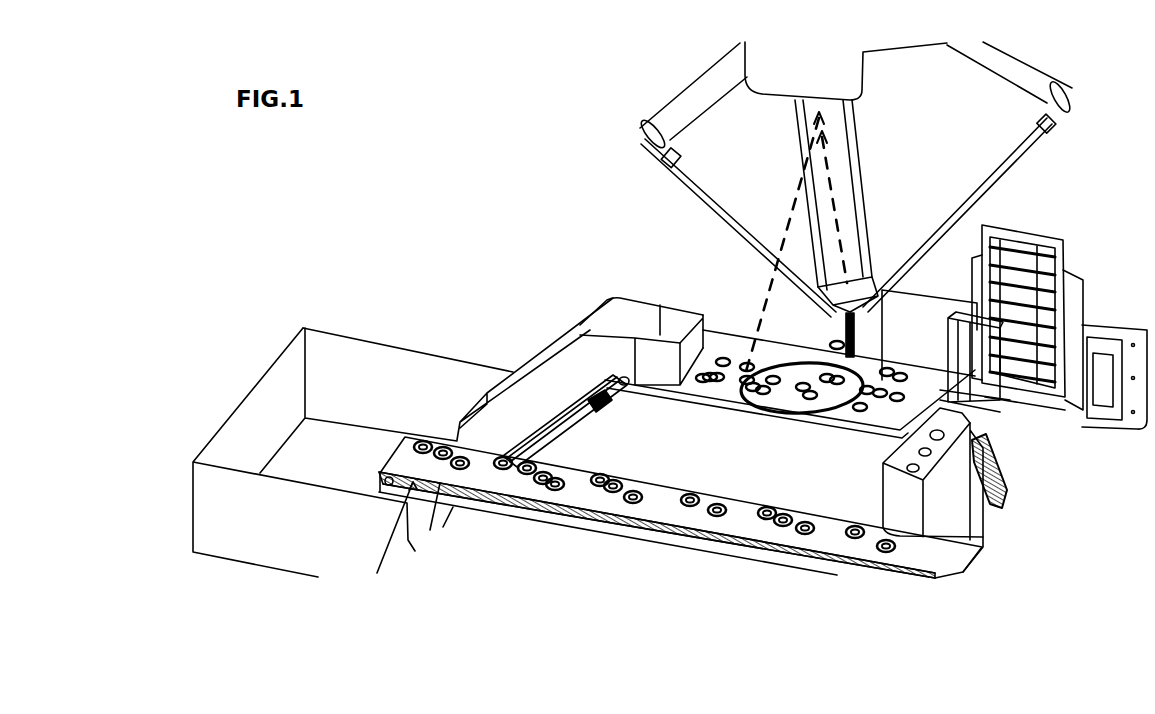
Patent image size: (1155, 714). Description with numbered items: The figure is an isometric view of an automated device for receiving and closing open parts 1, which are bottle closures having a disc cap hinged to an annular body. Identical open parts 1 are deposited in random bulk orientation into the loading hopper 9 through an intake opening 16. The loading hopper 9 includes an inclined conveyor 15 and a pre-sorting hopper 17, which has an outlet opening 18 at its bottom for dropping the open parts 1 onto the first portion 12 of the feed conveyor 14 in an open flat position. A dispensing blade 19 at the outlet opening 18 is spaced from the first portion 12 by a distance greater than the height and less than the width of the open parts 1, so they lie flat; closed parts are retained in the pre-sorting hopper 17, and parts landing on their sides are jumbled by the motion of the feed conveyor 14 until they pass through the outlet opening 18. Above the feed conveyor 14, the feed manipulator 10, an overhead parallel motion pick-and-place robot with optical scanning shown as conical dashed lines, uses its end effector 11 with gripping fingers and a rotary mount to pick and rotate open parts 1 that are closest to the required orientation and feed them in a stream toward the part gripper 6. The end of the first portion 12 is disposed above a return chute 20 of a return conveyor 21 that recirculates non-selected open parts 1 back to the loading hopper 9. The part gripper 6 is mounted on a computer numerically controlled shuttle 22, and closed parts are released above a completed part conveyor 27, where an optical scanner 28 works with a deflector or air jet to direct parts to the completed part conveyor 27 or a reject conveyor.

The open part 1 is at (790, 365).
The part gripper 6 is at (1013, 397).
The loading hopper 9 is at (318, 360).
The feed manipulator 10 is at (667, 112).
The end effector 11 is at (863, 348).
The first portion of the feed conveyor 12 is at (730, 390).
The feed conveyor 14 is at (798, 420).
The inclined conveyor 15 is at (543, 355).
The intake opening 16 is at (382, 385).
The pre-sorting hopper 17 is at (673, 317).
The outlet opening 18 is at (676, 396).
The dispensing blade 19 is at (707, 345).
The return chute 20 is at (910, 502).
The return conveyor 21 is at (565, 520).
The computer numerically controlled shuttle 22 is at (1088, 258).
The completed part conveyor 27 is at (970, 510).
The optical scanner 28 is at (1003, 463).